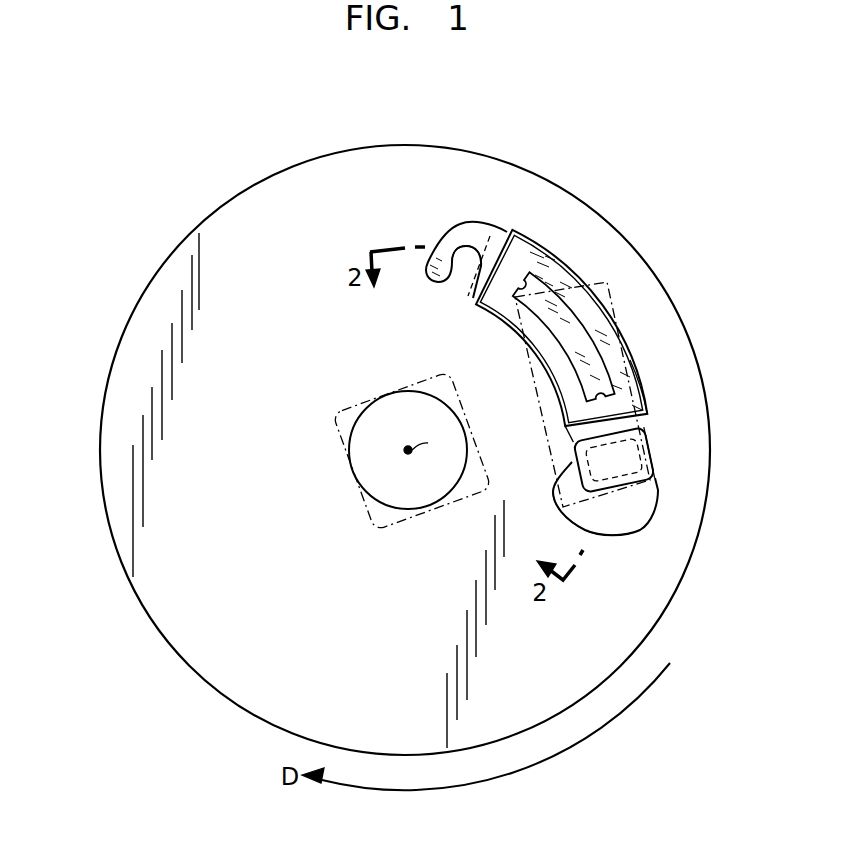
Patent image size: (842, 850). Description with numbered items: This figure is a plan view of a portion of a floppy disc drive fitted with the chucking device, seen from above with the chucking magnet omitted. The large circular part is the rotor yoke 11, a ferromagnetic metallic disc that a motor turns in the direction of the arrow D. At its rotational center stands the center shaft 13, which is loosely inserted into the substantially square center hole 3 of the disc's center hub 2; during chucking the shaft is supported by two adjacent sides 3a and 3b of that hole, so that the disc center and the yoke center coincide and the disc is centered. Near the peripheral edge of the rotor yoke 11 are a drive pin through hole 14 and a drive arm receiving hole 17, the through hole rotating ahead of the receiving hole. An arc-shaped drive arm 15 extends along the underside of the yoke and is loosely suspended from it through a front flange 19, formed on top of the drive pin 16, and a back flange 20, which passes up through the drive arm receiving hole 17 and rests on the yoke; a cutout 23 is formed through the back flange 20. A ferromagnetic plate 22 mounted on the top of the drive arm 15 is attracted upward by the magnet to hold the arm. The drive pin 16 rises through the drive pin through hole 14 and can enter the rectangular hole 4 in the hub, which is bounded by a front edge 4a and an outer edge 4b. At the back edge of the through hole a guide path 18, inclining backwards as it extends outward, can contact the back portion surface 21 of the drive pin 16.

The center hub 2 is at (173, 263).
The center hole 3 is at (378, 464).
The side of center hole 3a is at (350, 468).
The side of center hole 3b is at (392, 392).
The hole 4 is at (596, 354).
The front edge 4a is at (660, 512).
The outer edge 4b is at (645, 385).
The rotor yoke 11 is at (113, 365).
The center shaft 13 is at (420, 483).
The drive pin through hole 14 is at (622, 527).
The drive arm 15 is at (547, 267).
The drive pin 16 is at (650, 468).
The drive arm receiving hole 17 is at (523, 237).
The guide path 18 is at (590, 452).
The front flange 19 is at (572, 443).
The back flange 20 is at (475, 227).
The back portion surface 21 is at (648, 430).
The ferromagnetic plate 22 is at (587, 357).
The cutout 23 is at (463, 247).